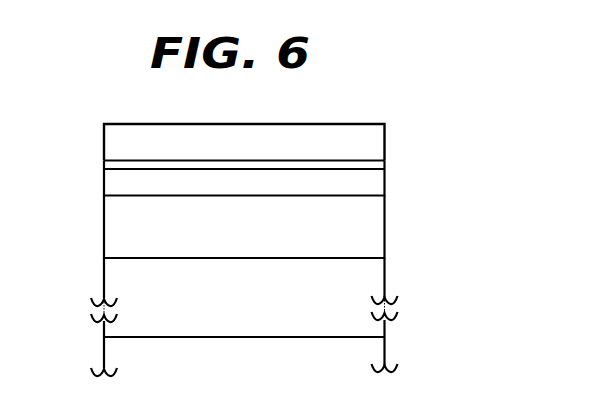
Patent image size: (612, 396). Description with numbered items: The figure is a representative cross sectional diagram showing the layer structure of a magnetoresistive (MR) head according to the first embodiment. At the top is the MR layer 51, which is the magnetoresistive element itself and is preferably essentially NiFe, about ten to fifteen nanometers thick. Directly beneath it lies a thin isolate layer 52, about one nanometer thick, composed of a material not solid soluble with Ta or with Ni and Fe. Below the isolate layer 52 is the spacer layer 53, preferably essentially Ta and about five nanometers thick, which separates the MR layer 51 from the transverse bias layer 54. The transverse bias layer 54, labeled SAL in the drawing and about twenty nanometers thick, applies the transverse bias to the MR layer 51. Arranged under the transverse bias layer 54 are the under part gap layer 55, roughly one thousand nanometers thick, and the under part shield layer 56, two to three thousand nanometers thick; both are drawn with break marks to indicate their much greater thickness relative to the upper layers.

The MR layer 51 is at (323, 123).
The isolate layer 52 is at (387, 167).
The spacer layer 53 is at (377, 182).
The transverse bias layer 54 is at (377, 222).
The under part gap layer 55 is at (365, 272).
The under part shield layer 56 is at (368, 360).